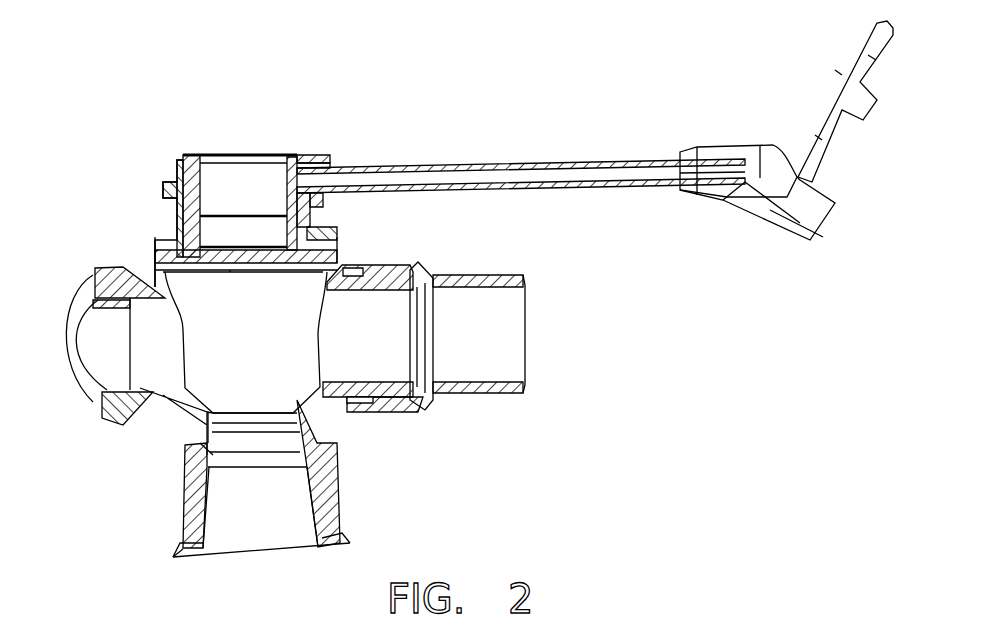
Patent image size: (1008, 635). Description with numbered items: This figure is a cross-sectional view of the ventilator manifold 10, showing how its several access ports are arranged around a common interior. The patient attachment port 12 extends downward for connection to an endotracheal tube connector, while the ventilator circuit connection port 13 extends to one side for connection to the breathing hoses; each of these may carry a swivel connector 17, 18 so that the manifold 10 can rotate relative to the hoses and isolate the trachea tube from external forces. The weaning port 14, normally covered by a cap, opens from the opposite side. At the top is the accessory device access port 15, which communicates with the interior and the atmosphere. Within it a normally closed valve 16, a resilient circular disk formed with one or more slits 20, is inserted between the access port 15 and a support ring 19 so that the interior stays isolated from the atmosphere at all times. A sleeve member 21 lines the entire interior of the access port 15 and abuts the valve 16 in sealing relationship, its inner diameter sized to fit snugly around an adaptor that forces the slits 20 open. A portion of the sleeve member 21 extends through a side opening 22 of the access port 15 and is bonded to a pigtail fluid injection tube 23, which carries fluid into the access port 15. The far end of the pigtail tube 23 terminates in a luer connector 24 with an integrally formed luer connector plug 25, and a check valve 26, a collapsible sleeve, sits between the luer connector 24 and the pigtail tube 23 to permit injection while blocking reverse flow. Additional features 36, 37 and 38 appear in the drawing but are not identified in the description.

The ventilator manifold 10 is at (436, 264).
The patient attachment port 12 is at (342, 507).
The ventilator circuit connection port 13 is at (330, 404).
The weaning port 14 is at (142, 428).
The accessory device access port 15 is at (312, 156).
The normally closed valve 16 is at (157, 258).
The swivel connector 17 is at (500, 281).
The swivel connector 18 is at (343, 549).
The support ring 19 is at (330, 266).
The slit 20 is at (267, 254).
The sleeve member 21 is at (225, 154).
The side opening 22 is at (292, 154).
The pigtail fluid injection tube 23 is at (422, 160).
The luer connector 24 is at (832, 232).
The luer connector plug 25 is at (840, 90).
The check valve 26 is at (743, 170).
The nut 36 is at (165, 192).
The valve chamber 37 is at (273, 382).
The stem head 38 is at (203, 181).